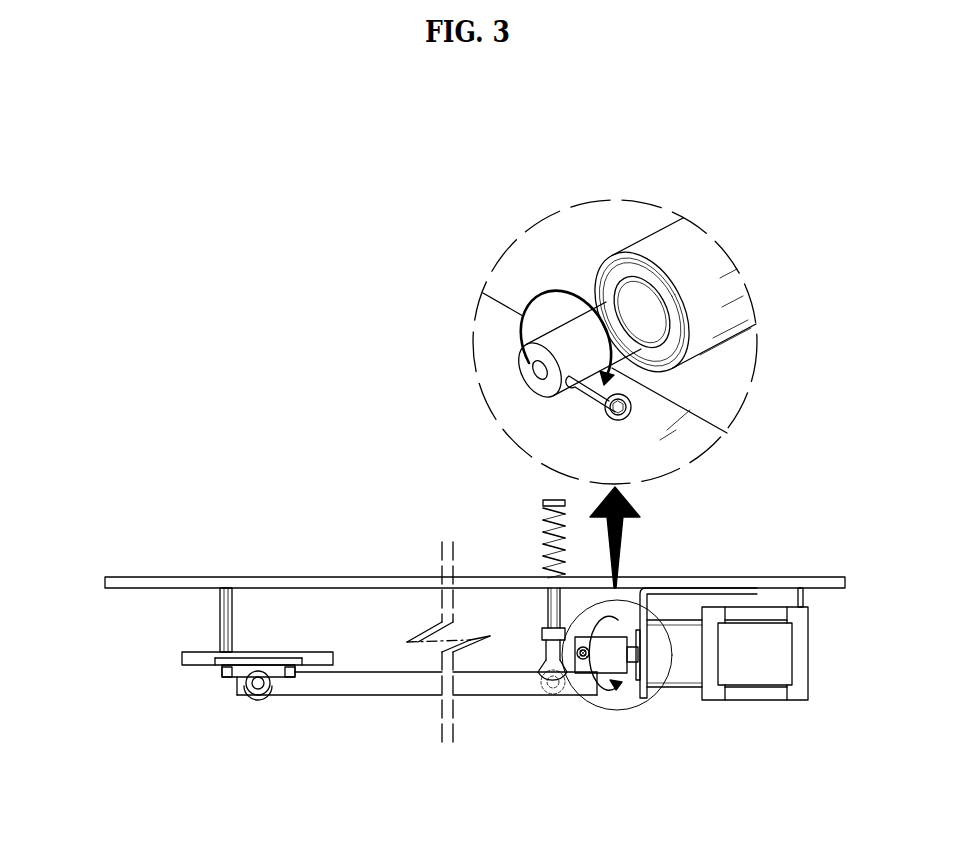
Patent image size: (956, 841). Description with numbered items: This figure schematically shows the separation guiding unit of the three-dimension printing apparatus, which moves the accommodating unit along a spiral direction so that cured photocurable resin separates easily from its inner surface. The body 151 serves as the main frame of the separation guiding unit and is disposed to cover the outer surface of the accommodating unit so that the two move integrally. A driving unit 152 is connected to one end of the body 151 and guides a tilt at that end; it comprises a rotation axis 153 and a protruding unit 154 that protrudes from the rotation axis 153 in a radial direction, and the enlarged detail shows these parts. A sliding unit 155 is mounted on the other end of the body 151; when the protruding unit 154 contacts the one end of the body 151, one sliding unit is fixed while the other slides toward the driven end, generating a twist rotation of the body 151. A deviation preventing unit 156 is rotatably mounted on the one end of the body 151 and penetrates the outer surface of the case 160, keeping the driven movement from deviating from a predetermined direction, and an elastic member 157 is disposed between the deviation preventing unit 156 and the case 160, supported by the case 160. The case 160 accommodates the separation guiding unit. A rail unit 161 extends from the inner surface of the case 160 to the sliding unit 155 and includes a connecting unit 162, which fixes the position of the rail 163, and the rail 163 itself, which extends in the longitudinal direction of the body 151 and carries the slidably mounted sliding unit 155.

The body 151 is at (473, 683).
The driving unit 152 is at (683, 673).
The rotation axis 153 is at (605, 660).
The protruding unit 154 is at (583, 660).
The sliding unit 155 is at (282, 680).
The deviation preventing unit 156 is at (547, 690).
The elastic member 157 is at (545, 520).
The case 160 is at (237, 577).
The rail unit 161 is at (192, 630).
The connecting unit 162 is at (224, 615).
The rail 163 is at (190, 658).